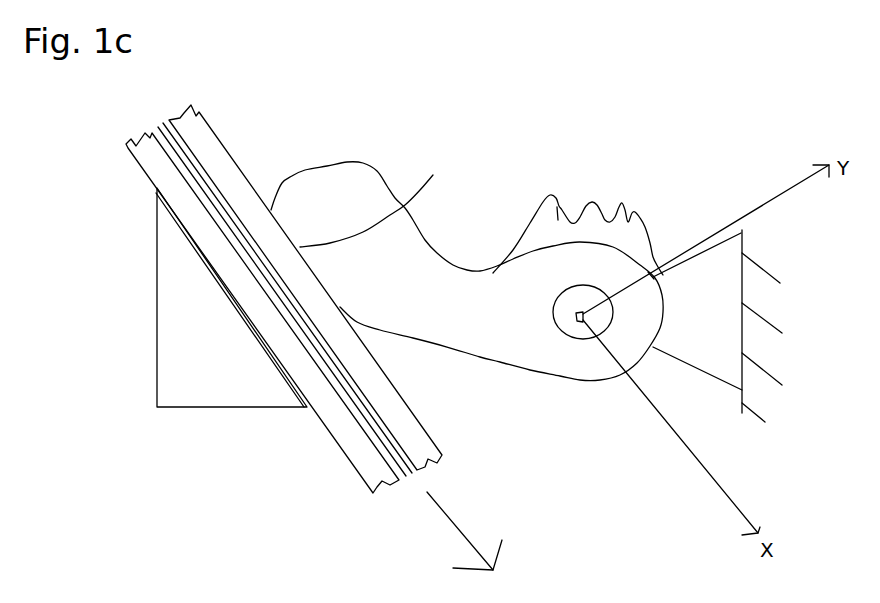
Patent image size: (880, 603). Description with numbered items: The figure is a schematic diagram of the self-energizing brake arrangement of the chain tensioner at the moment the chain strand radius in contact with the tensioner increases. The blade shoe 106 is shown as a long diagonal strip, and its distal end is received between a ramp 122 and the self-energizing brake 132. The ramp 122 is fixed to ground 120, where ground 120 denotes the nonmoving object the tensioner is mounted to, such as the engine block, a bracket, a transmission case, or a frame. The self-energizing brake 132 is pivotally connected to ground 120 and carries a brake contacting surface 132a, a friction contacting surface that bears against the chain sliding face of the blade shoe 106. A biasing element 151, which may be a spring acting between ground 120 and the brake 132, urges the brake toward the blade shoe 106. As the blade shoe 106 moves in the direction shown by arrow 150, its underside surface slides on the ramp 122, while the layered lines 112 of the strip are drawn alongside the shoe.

The blade shoe 106 is at (202, 135).
The strip layers 112 is at (165, 132).
The ramp 122 is at (222, 347).
The self-energizing brake 132 is at (330, 195).
The brake contacting surface 132a is at (397, 201).
The biasing element 151 is at (568, 218).
The ground 120 is at (758, 258).
The arrow 150 is at (443, 517).